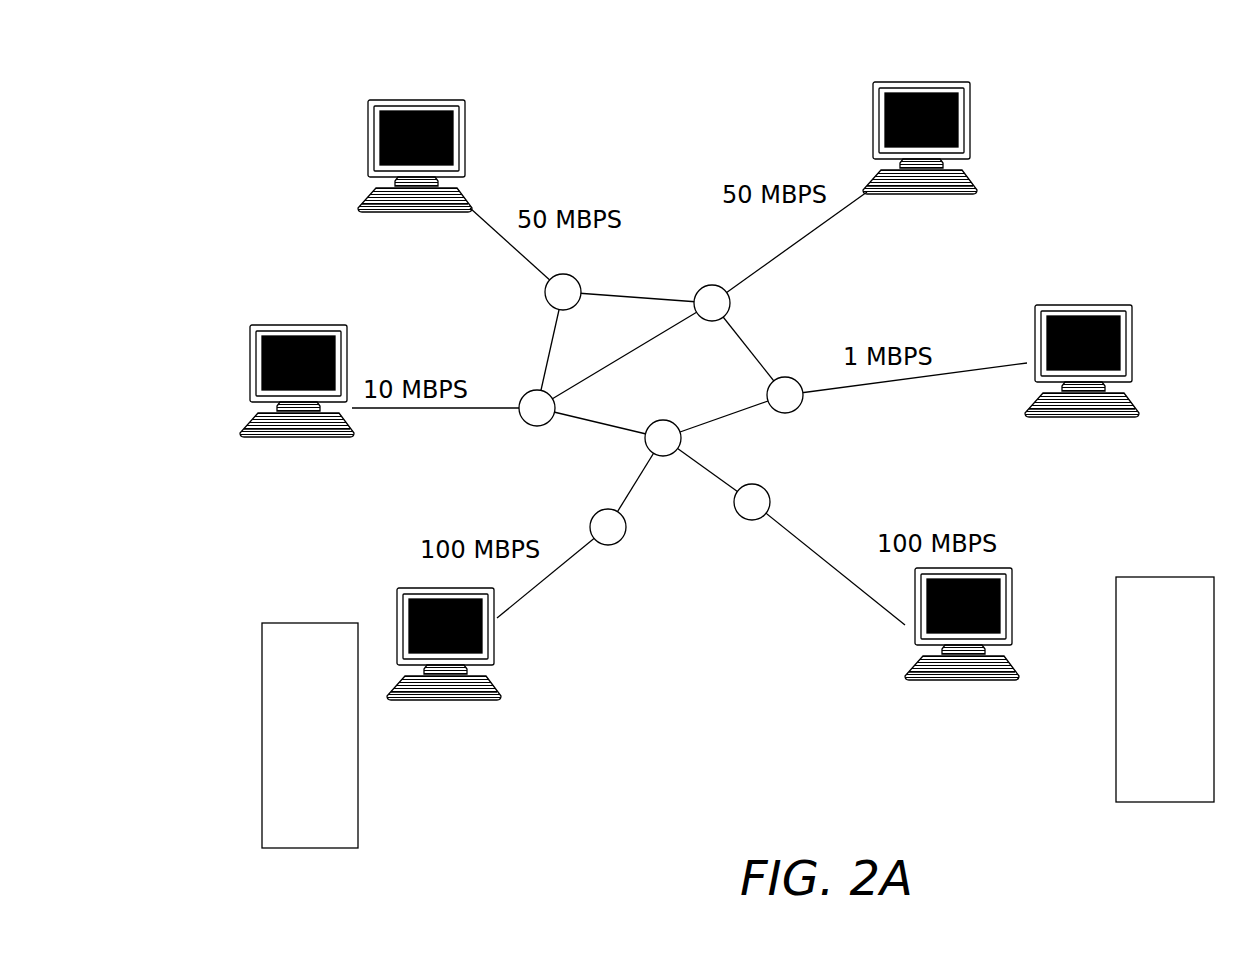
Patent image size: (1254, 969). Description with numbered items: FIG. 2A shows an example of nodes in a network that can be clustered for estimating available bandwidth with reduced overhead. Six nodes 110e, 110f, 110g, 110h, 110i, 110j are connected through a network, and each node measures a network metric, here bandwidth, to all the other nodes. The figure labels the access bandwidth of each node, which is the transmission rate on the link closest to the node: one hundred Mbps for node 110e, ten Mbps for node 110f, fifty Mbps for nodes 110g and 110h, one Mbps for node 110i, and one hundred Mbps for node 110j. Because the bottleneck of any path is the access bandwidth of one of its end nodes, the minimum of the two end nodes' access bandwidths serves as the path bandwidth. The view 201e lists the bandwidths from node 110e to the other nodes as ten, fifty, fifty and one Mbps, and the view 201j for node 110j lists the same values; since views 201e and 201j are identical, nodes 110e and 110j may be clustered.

The node 110e is at (497, 643).
The node 110f is at (250, 363).
The node 110g is at (412, 100).
The node 110h is at (918, 82).
The node 110i is at (1137, 362).
The node 110j is at (1015, 623).
The view of the network for node 110e 201e is at (328, 848).
The view of the network for node 110j 201j is at (1150, 802).